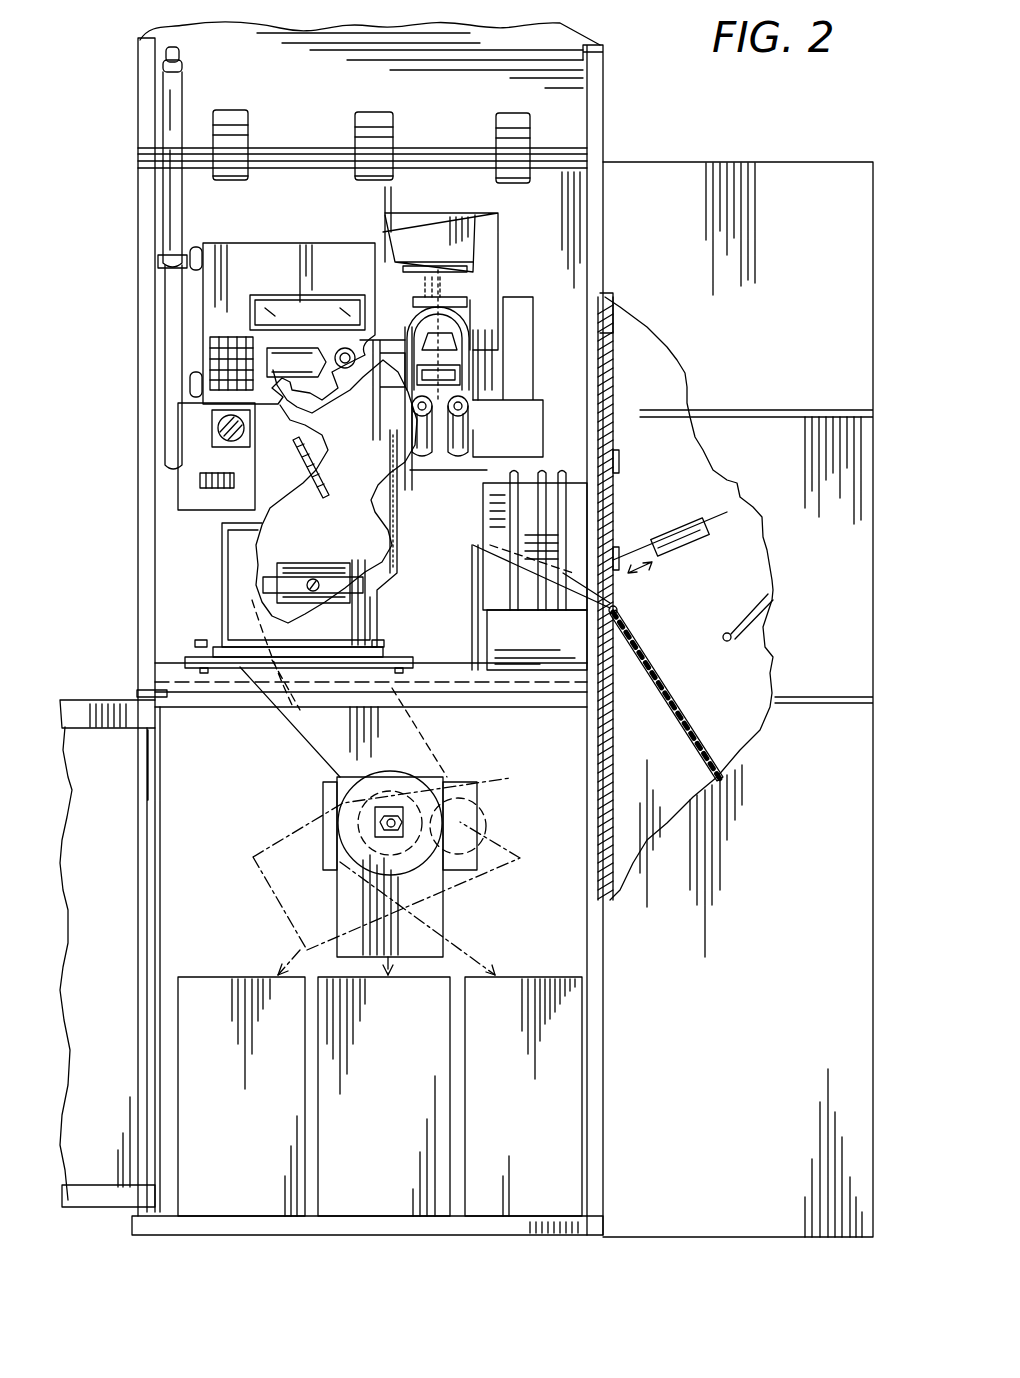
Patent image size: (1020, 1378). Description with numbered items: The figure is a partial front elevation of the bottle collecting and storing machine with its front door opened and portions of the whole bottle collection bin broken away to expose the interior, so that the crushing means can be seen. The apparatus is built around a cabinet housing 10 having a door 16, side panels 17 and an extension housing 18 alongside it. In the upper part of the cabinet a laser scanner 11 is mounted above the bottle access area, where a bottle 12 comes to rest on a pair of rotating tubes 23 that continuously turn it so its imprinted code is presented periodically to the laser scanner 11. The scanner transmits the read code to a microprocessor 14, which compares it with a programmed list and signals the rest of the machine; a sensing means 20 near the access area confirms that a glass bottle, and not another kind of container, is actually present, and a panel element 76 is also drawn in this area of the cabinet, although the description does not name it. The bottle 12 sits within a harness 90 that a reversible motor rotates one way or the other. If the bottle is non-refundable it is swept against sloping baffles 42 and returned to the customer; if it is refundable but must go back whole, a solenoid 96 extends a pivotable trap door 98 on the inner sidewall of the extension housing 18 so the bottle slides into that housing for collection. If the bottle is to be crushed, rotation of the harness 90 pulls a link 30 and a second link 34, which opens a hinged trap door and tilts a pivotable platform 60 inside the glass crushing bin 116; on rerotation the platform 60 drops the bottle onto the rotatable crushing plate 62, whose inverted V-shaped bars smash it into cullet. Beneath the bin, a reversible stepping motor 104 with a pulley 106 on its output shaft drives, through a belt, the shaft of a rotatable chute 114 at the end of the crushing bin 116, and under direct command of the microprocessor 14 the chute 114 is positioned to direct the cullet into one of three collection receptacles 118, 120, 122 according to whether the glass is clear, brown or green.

The cabinet housing 10 is at (680, 95).
The laser scanner 11 is at (487, 252).
The bottle 12 is at (440, 392).
The microprocessor 14 is at (392, 202).
The door 16 is at (112, 1084).
The side panels 17 is at (138, 613).
The extension housing 18 is at (832, 944).
The sensing means 20 is at (290, 400).
The rotating tubes 23 is at (470, 441).
The link 30 is at (368, 447).
The second link 34 is at (376, 479).
The sloping baffles 42 is at (547, 475).
The pivotable platform 60 is at (390, 585).
The rotatable crushing plate 62 is at (292, 577).
The control panel 76 is at (240, 243).
The harness 90 is at (480, 300).
The solenoid 96 is at (692, 545).
The pivotable trap door 98 is at (615, 514).
The reversible stepping motor 104 is at (492, 824).
The pulley 106 is at (490, 815).
The rotatable chute 114 is at (247, 882).
The glass crushing bin 116 is at (400, 545).
The collection receptacle 118 is at (228, 984).
The collection receptacle 120 is at (372, 1198).
The collection receptacle 122 is at (578, 1136).